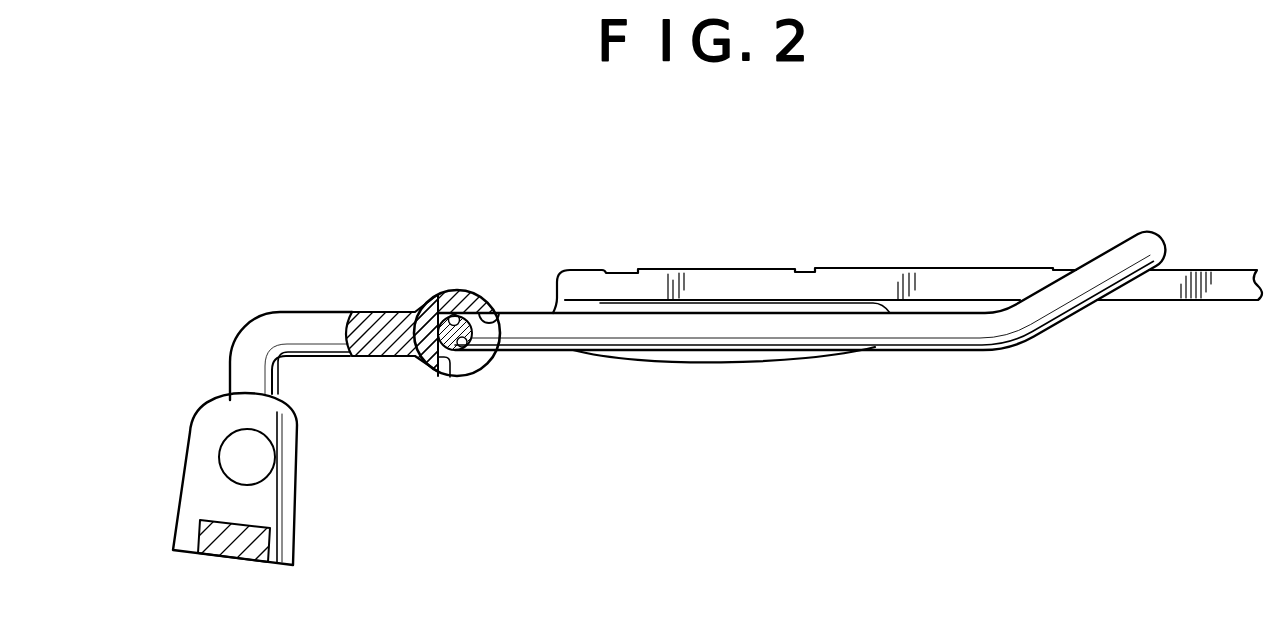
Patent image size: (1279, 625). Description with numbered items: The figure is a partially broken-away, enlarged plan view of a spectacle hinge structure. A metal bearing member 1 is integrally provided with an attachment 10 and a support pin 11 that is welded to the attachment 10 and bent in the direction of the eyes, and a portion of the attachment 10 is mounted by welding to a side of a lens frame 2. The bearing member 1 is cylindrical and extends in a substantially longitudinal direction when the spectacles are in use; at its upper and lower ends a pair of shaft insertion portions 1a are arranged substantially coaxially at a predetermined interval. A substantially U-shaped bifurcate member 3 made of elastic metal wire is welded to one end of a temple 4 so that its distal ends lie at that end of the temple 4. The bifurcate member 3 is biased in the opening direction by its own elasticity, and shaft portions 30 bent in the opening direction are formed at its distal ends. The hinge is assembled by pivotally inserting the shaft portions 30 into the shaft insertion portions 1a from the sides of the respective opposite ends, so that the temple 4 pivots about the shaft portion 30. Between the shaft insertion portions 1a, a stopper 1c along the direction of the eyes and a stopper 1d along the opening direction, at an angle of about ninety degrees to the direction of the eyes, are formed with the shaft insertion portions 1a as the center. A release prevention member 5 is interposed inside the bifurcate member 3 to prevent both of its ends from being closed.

The bearing member 1 is at (413, 324).
The shaft insertion portions 1a is at (452, 315).
The stopper 1c is at (450, 379).
The stopper 1d is at (494, 312).
The lens frame 2 is at (228, 565).
The bifurcate member 3 is at (915, 350).
The temple 4 is at (1157, 303).
The release prevention member 5 is at (718, 362).
The attachment 10 is at (238, 490).
The support pin 11 is at (307, 312).
The shaft portions 30 is at (472, 340).